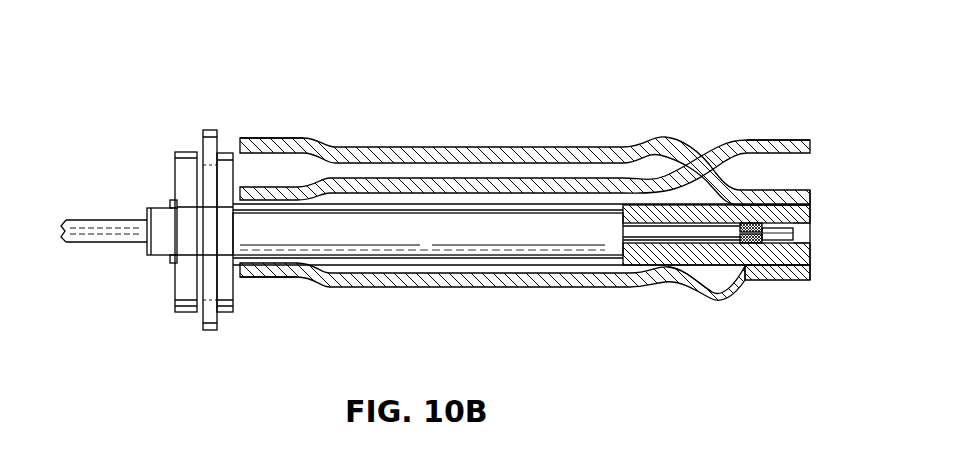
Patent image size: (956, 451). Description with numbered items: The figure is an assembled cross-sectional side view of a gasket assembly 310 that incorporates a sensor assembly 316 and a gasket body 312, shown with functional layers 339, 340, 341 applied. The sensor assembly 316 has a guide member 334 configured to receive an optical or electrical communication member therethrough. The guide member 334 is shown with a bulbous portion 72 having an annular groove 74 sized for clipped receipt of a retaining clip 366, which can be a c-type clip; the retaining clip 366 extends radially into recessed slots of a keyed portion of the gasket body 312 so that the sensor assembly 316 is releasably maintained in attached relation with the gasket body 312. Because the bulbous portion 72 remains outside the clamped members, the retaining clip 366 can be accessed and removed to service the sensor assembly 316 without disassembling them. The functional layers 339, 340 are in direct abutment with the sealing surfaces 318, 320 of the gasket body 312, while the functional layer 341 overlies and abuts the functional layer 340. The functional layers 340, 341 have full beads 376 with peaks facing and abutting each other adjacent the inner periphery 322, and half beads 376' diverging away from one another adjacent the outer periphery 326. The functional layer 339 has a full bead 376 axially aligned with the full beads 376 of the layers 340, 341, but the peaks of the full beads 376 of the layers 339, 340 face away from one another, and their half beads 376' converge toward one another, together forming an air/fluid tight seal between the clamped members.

The gasket assembly 310 is at (537, 105).
The sensor assembly 316 is at (120, 155).
The outer periphery 326 is at (168, 203).
The bulbous portion 72 is at (175, 292).
The annular groove 74 is at (206, 292).
The retaining clip 366 is at (204, 142).
The functional layer 341 is at (441, 147).
The functional layer 340 is at (363, 147).
The functional layer 339 is at (368, 288).
The half bead 376' is at (282, 200).
The full bead 376 is at (739, 230).
The sealing surface 318 is at (560, 204).
The sealing surface 320 is at (507, 264).
The guide member 334 is at (568, 254).
The gasket body 312 is at (784, 195).
The inner periphery 322 is at (812, 254).